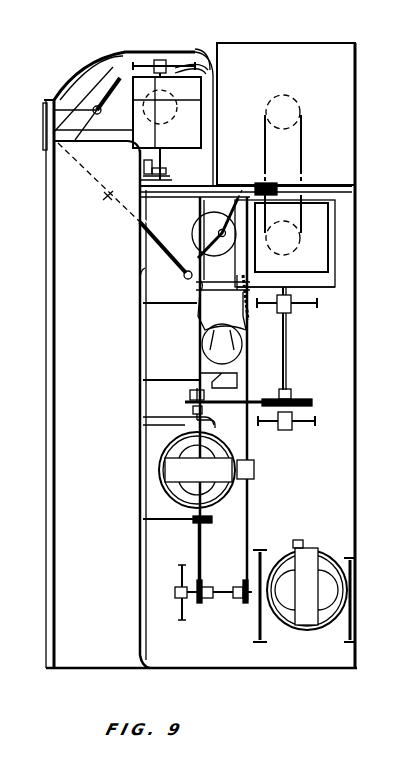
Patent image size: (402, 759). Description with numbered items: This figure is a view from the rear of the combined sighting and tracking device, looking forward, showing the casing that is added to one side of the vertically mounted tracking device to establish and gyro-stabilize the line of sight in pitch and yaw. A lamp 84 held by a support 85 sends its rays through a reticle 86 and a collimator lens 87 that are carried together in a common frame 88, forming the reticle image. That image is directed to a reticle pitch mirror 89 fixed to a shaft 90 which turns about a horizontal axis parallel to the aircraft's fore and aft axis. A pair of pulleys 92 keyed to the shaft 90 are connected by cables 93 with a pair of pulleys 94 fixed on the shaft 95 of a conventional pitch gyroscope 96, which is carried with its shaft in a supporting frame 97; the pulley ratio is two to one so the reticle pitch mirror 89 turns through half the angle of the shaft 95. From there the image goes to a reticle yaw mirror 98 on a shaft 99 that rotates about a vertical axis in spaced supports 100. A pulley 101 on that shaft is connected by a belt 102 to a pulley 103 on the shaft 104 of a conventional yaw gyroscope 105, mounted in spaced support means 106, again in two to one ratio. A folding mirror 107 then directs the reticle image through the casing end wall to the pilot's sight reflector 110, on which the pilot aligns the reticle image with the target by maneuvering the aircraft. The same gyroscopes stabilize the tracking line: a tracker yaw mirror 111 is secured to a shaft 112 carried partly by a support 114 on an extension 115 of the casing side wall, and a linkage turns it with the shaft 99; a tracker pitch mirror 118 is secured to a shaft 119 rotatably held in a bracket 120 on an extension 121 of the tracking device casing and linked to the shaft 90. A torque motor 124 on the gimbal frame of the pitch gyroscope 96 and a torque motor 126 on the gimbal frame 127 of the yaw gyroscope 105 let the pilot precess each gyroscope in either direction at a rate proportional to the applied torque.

The lamp 84 is at (203, 344).
The support 85 is at (175, 372).
The reticle 86 is at (198, 304).
The collimator lens 87 is at (185, 277).
The common frame 88 is at (251, 313).
The reticle pitch mirror 89 is at (218, 235).
The shaft 90 is at (214, 220).
The pulleys 92 is at (205, 219).
The cables 93 is at (212, 534).
The pulleys 94 is at (205, 585).
The shaft 95 is at (228, 600).
The pitch gyroscope 96 is at (310, 552).
The supporting frame 97 is at (186, 615).
The reticle yaw mirror 98 is at (315, 220).
The shaft 99 is at (286, 345).
The spaced supports 100 is at (298, 308).
The pulley 101 is at (298, 400).
The belt 102 is at (215, 412).
The pulley 103 is at (190, 398).
The shaft 104 is at (216, 428).
The yaw gyroscope 105 is at (163, 452).
The spaced support means 106 is at (175, 433).
The folding mirror 107 is at (330, 280).
The pilot's sight reflector 110 is at (340, 87).
The tracker yaw mirror 111 is at (198, 93).
The shaft 112 is at (166, 158).
The support 114 is at (172, 66).
The extension 115 is at (212, 72).
The tracker pitch mirror 118 is at (125, 57).
The shaft 119 is at (100, 110).
The bracket 120 is at (65, 107).
The extension 121 is at (45, 115).
The torque motor 124 is at (297, 545).
The torque motor 126 is at (254, 468).
The gimbal frame 127 is at (216, 518).